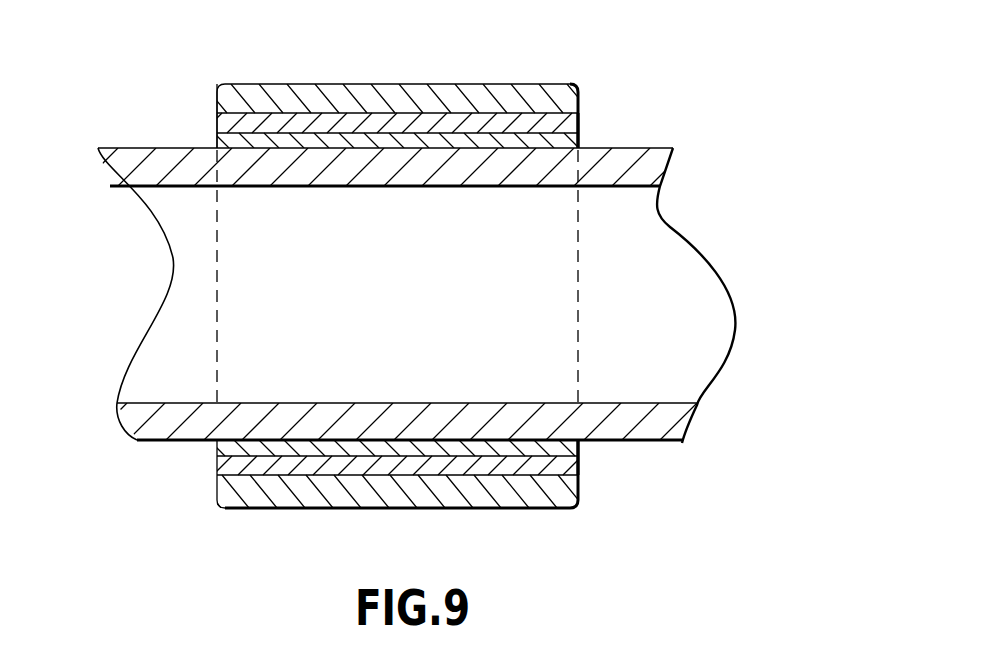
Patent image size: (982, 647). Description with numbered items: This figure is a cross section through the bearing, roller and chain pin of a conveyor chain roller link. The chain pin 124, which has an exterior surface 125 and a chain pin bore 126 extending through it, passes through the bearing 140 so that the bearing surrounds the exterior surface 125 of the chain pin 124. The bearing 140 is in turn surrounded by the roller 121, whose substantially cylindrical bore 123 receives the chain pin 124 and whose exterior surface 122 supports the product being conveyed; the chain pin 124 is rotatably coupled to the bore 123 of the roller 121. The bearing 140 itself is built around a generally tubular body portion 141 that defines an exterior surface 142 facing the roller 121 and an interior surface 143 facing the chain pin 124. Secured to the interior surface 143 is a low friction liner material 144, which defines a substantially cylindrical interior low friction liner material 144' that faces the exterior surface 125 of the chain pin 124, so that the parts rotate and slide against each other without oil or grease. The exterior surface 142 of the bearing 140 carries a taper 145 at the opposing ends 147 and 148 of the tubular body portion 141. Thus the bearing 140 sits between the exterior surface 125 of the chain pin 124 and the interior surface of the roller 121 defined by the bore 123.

The roller 121 is at (512, 104).
The exterior surface 122 is at (378, 510).
The substantially cylindrical bore 123 is at (262, 462).
The chain pin 124 is at (640, 257).
The exterior surface 125 is at (652, 444).
The chain pin bore 126 is at (186, 187).
The bearing 140 is at (590, 477).
The tubular body portion 141 is at (410, 118).
The exterior surface 142 is at (320, 138).
The interior surface 143 is at (217, 468).
The low friction liner material 144 is at (689, 128).
The interior low friction liner material 144' is at (617, 472).
The taper 145 is at (217, 114).
The opposing end 147 is at (206, 123).
The opposing end 148 is at (613, 107).